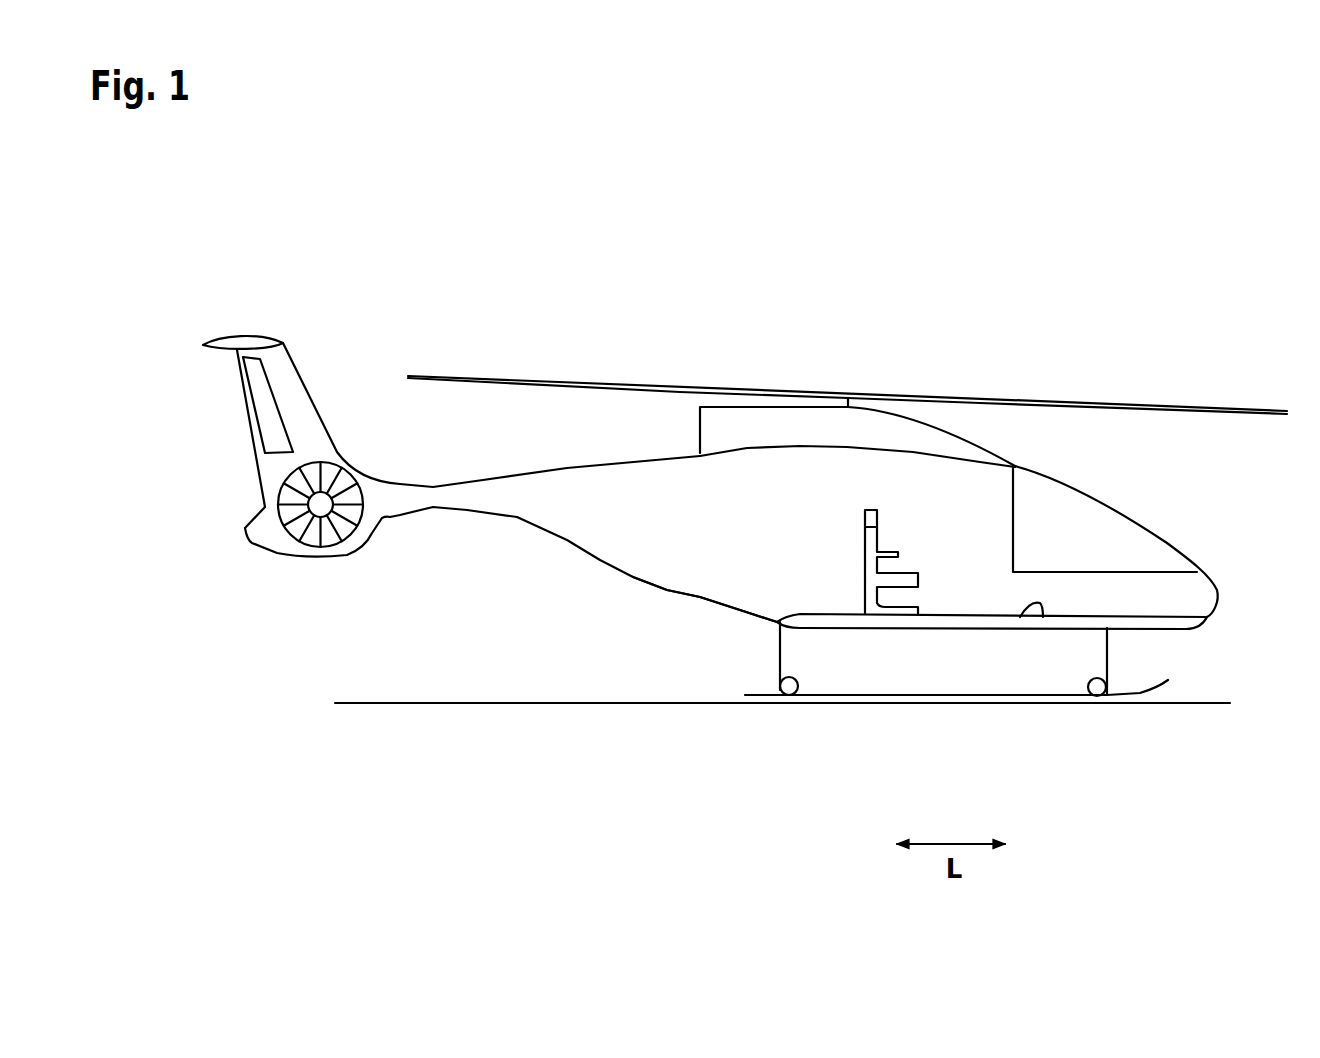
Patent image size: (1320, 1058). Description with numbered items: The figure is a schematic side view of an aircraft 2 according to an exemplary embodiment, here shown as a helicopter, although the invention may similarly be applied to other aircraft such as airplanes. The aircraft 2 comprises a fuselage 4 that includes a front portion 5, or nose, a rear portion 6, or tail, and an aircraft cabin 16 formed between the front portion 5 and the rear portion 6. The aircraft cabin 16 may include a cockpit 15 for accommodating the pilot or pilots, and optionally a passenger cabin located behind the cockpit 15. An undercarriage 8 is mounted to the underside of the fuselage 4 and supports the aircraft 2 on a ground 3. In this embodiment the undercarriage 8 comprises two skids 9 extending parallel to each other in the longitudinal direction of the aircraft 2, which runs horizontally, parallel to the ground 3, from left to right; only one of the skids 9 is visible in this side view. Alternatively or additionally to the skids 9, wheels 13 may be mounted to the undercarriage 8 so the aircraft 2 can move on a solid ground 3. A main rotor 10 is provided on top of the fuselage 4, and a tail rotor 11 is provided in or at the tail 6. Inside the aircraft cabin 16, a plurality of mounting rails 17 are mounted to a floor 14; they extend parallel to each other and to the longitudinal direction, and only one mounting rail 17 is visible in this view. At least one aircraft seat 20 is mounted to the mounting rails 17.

The aircraft 2 is at (1118, 246).
The ground 3 is at (1228, 705).
The fuselage 4 is at (709, 628).
The front portion 5 is at (1230, 577).
The rear portion 6 is at (445, 532).
The undercarriage 8 is at (1197, 650).
The skid 9 is at (1160, 692).
The main rotor 10 is at (1161, 396).
The tail rotor 11 is at (334, 457).
The wheels 13 is at (790, 696).
The floor 14 is at (965, 629).
The cockpit 15 is at (1133, 517).
The aircraft cabin 16 is at (1019, 456).
The mounting rail 17 is at (1042, 606).
The aircraft seat 20 is at (908, 535).